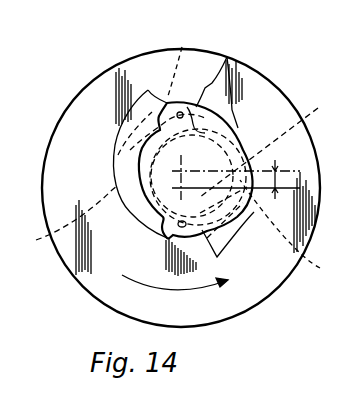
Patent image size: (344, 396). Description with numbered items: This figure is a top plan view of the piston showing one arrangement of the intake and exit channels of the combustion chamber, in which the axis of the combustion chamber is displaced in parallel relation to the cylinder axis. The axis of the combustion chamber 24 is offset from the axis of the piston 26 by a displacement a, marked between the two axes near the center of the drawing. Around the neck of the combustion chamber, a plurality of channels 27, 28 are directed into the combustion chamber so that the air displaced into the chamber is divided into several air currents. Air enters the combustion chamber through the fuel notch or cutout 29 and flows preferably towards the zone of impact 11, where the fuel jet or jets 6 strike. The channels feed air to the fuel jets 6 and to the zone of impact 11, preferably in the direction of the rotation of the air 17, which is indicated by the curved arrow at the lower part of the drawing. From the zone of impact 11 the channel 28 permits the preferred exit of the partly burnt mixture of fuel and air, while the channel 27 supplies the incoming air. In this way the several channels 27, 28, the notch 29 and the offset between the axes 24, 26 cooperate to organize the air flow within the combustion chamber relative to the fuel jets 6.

The channel 28 is at (110, 143).
The fuel notch or cutout 29 is at (228, 57).
The axis of the combustion chamber 24 is at (181, 171).
The axis of the piston 26 is at (181, 188).
The zone of impact 11 is at (177, 173).
The displacement a is at (276, 179).
The fuel jet 6 is at (182, 47).
The channel 27 is at (240, 210).
The direction of rotation of the air 17 is at (182, 288).